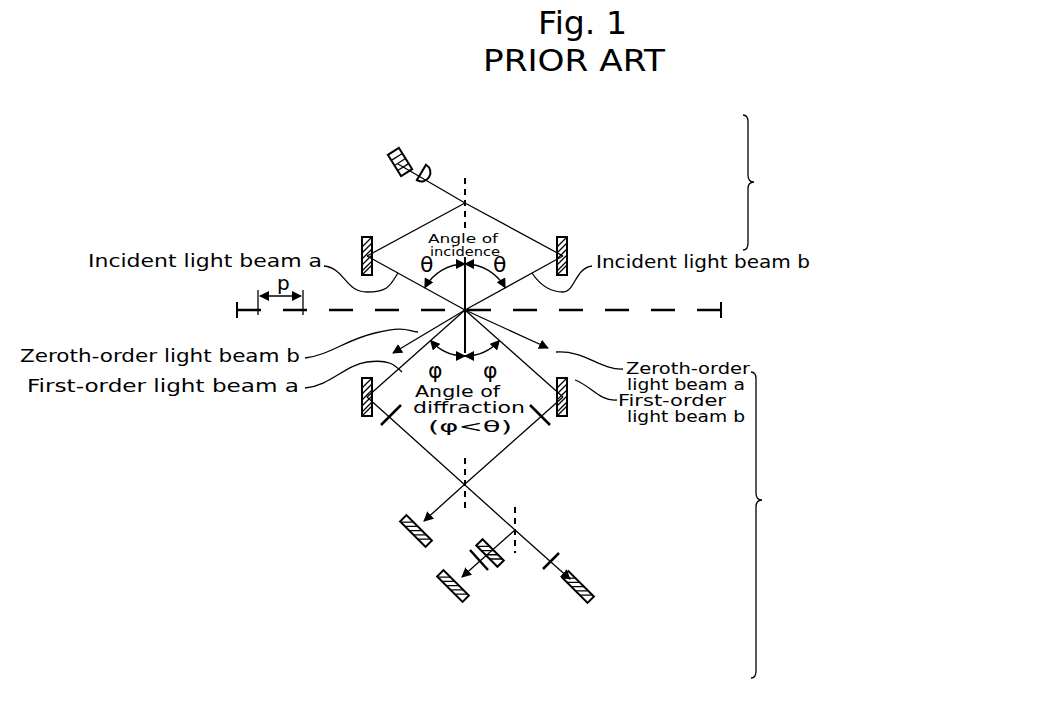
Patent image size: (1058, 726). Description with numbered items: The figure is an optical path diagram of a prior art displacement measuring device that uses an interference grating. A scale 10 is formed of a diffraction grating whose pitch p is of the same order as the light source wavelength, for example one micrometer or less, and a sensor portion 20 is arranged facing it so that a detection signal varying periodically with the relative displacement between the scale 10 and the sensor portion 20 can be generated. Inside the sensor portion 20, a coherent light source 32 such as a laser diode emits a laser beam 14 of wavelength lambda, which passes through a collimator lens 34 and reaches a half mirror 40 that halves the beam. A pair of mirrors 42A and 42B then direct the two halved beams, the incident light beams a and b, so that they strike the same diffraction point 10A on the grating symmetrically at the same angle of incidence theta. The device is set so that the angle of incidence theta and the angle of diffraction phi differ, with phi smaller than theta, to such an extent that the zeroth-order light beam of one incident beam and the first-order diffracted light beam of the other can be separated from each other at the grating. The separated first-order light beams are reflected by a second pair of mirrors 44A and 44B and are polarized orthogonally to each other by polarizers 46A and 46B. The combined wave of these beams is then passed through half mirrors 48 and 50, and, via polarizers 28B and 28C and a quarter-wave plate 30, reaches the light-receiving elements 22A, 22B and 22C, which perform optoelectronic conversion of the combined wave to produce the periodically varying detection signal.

The scale 10 is at (655, 310).
The diffraction point 10A is at (468, 313).
The laser beam 14 is at (437, 187).
The sensor portion 20 is at (774, 396).
The light-receiving element 22A is at (410, 546).
The light-receiving element 22B is at (588, 592).
The light-receiving element 22C is at (443, 601).
The polarizer 28B is at (560, 562).
The polarizer 28C is at (485, 571).
The quarter-wave plate 30 is at (500, 563).
The coherent light source 32 is at (406, 150).
The collimator lens 34 is at (432, 168).
The half mirror 40 is at (470, 197).
The mirror 42A is at (356, 254).
The mirror 42B is at (570, 254).
The mirror 44A is at (568, 416).
The mirror 44B is at (362, 415).
The polarizer 46A is at (548, 427).
The polarizer 46B is at (383, 427).
The half mirror 48 is at (470, 459).
The half mirror 50 is at (518, 511).